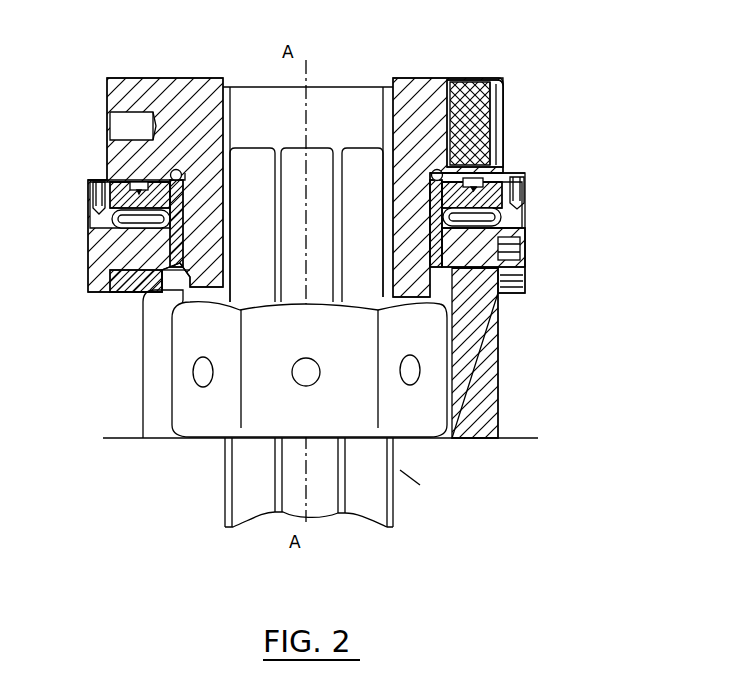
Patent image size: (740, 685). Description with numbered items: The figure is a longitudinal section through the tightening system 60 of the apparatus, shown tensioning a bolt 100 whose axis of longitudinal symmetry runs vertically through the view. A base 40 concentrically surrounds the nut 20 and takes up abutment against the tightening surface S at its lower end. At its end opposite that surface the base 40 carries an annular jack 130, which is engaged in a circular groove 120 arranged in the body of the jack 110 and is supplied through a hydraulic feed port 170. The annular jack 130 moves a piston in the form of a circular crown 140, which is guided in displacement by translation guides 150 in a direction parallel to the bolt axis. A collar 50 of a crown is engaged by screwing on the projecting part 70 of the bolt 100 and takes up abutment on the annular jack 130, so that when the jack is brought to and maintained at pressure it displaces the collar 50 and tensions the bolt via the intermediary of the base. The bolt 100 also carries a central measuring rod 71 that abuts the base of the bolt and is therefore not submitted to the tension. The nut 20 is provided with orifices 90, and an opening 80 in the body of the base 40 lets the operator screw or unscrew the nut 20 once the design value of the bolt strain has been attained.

The nut 20 is at (420, 412).
The base 40 is at (490, 340).
The collar 50 is at (505, 100).
The system for tightening 60 is at (538, 188).
The projecting part of the bolt 70 is at (345, 190).
The central measuring rod 71 is at (322, 485).
The opening 80 is at (143, 372).
The orifices 90 is at (318, 380).
The bolt 100 is at (398, 468).
The body of the jack 110 is at (90, 282).
The circular groove 120 is at (117, 238).
The annular jack 130 is at (112, 232).
The piston in the form of a circular crown 140 is at (125, 180).
The translation guides 150 is at (97, 180).
The hydraulic feed port 170 is at (520, 246).